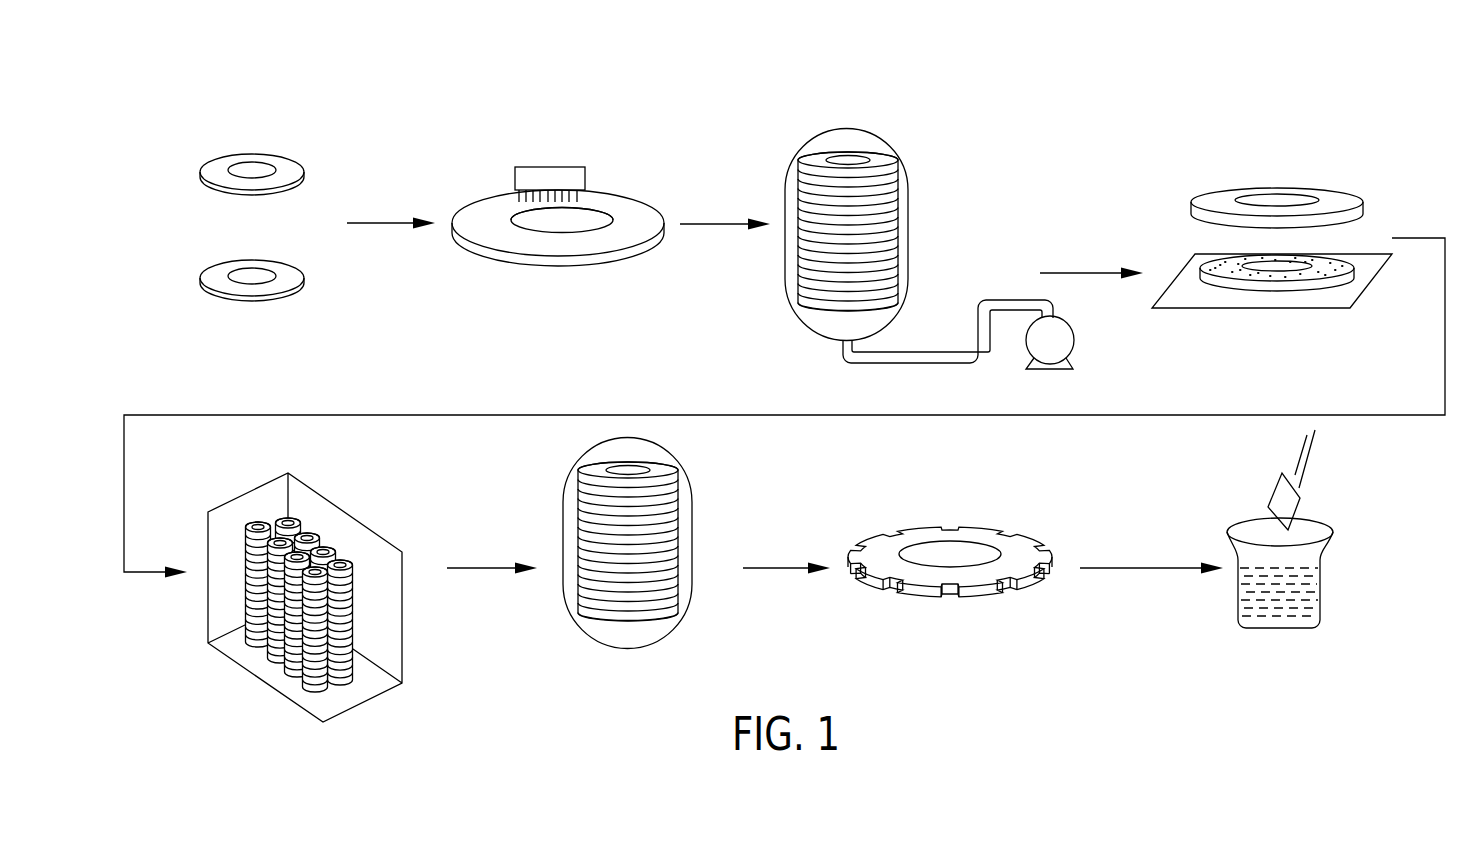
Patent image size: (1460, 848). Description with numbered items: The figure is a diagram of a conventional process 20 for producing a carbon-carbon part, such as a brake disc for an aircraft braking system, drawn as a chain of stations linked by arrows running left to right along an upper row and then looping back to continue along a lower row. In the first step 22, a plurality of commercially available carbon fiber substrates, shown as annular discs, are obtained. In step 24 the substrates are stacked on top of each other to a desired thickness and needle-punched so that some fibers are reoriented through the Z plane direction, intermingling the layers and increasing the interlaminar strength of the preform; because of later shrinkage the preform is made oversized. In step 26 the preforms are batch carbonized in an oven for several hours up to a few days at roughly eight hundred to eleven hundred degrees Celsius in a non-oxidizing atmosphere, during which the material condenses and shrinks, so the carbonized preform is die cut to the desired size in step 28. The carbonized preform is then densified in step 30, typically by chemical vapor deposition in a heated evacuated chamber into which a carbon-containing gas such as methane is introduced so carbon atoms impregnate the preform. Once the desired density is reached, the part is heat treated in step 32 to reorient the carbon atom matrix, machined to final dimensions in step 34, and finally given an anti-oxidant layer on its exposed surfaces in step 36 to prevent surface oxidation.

The conventional process 20 is at (709, 108).
The first step 22 is at (214, 188).
The stacking step 24 is at (466, 168).
The batch carbonization step 26 is at (906, 142).
The die cutting step 28 is at (1258, 185).
The densification step 30 is at (353, 513).
The heat treatment step 32 is at (690, 514).
The machining step 34 is at (1030, 533).
The anti-oxidant layer application step 36 is at (1252, 520).